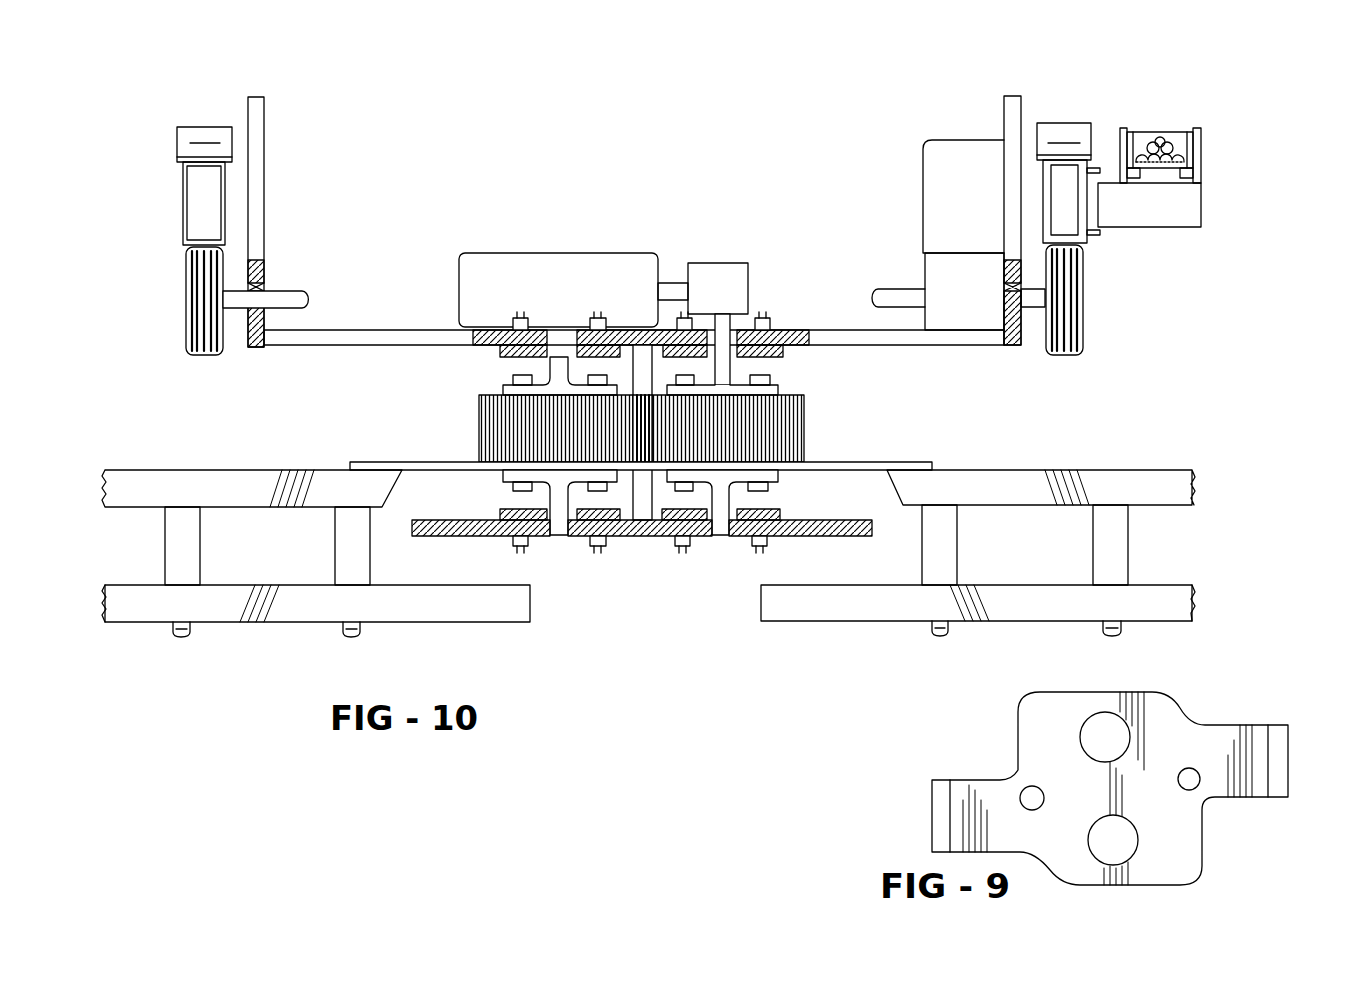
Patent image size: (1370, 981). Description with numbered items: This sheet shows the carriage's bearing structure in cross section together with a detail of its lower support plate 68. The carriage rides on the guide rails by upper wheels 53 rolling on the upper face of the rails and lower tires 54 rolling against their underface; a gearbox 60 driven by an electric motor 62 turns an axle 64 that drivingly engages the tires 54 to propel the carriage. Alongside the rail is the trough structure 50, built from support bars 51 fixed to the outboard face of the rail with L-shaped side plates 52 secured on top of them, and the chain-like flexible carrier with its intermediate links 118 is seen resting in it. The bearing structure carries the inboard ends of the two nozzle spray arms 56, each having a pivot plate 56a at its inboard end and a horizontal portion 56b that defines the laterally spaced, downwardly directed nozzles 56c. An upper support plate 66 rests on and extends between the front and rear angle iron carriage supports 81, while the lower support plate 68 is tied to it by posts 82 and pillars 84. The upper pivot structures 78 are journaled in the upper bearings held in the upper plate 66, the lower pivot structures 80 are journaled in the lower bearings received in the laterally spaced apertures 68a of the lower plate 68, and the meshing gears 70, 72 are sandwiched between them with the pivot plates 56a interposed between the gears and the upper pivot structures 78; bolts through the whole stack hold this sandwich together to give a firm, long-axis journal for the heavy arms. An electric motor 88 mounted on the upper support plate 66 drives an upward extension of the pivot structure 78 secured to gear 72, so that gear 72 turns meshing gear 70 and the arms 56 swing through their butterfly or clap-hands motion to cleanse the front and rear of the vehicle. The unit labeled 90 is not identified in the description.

In FIG. 10, the trough structure 50 is at (1212, 137).
In FIG. 10, the support bar 51 is at (1162, 230).
In FIG. 10, the L-shaped side plate 52 is at (1200, 172).
In FIG. 10, the upper wheel 53 is at (205, 128).
In FIG. 10, the lower tire 54 is at (205, 310).
In FIG. 10, the nozzle spray arm 56 is at (284, 462).
In FIG. 10, the pivot plate 56a is at (375, 463).
In FIG. 10, the horizontal portion 56b is at (182, 480).
In FIG. 10, the downwardly directed nozzle 56c is at (182, 638).
In FIG. 10, the gearbox 60 is at (940, 280).
In FIG. 10, the electric motor 62 is at (930, 170).
In FIG. 10, the axle 64 is at (885, 298).
In FIG. 10, the upper support plate 66 is at (822, 338).
In FIG. 10, the lower support plate 68 is at (800, 538).
In FIG. 9, the lower support plate 68 is at (1010, 720).
In FIG. 9, the aperture 68a is at (1135, 832).
In FIG. 10, the gear 70 is at (482, 415).
In FIG. 10, the gear 72 is at (800, 405).
In FIG. 10, the upper pivot structure 78 is at (515, 392).
In FIG. 10, the lower pivot structure 80 is at (508, 477).
In FIG. 10, the angle iron carriage support 81 is at (410, 338).
In FIG. 9, the post 82 is at (1022, 795).
In FIG. 9, the pillar 84 is at (1285, 740).
In FIG. 10, the electric motor 88 is at (530, 265).
In FIG. 10, the power unit 90 is at (735, 285).
In FIG. 10, the intermediate link 118 is at (1160, 130).